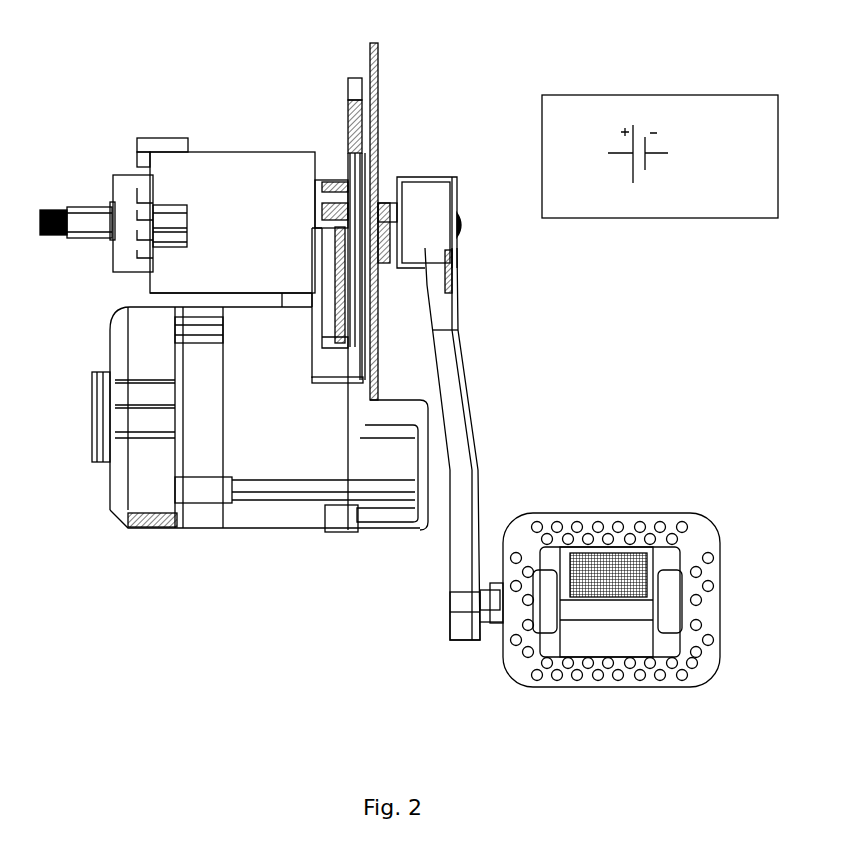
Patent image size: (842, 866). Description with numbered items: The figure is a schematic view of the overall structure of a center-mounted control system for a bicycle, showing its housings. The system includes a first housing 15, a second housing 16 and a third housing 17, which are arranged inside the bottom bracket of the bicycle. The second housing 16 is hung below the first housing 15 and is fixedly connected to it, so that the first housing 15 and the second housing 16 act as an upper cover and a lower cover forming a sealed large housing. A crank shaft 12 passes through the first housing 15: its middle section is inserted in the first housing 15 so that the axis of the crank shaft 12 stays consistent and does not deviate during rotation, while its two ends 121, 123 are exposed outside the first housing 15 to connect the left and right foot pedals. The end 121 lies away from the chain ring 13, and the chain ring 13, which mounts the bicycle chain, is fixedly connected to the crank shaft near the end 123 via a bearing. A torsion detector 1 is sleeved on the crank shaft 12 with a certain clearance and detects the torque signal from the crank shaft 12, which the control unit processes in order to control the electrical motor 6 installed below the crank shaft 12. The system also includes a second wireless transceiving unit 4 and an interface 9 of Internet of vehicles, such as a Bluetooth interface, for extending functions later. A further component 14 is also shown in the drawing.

The torsion detector 1 is at (140, 165).
The crank shaft 12 is at (97, 212).
The end of the crank shaft 121 is at (85, 230).
The first housing 15 is at (268, 152).
The connecting rod 14 is at (348, 120).
The chain ring 13 is at (378, 135).
The end of the crank shaft 123 is at (462, 222).
The third housing 17 is at (587, 123).
The electrical motor 6 is at (145, 358).
The second wireless transceiving unit 4 is at (157, 506).
The interface of Internet of vehicles 9 is at (217, 485).
The second housing 16 is at (253, 532).